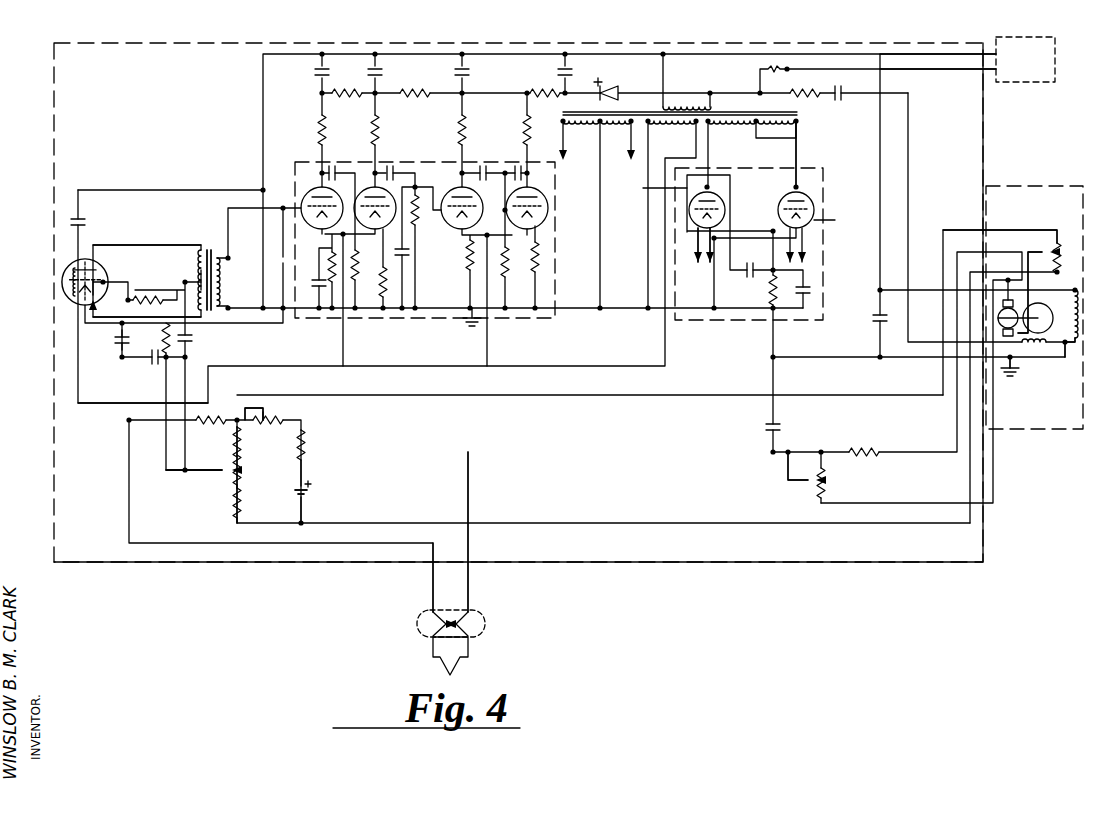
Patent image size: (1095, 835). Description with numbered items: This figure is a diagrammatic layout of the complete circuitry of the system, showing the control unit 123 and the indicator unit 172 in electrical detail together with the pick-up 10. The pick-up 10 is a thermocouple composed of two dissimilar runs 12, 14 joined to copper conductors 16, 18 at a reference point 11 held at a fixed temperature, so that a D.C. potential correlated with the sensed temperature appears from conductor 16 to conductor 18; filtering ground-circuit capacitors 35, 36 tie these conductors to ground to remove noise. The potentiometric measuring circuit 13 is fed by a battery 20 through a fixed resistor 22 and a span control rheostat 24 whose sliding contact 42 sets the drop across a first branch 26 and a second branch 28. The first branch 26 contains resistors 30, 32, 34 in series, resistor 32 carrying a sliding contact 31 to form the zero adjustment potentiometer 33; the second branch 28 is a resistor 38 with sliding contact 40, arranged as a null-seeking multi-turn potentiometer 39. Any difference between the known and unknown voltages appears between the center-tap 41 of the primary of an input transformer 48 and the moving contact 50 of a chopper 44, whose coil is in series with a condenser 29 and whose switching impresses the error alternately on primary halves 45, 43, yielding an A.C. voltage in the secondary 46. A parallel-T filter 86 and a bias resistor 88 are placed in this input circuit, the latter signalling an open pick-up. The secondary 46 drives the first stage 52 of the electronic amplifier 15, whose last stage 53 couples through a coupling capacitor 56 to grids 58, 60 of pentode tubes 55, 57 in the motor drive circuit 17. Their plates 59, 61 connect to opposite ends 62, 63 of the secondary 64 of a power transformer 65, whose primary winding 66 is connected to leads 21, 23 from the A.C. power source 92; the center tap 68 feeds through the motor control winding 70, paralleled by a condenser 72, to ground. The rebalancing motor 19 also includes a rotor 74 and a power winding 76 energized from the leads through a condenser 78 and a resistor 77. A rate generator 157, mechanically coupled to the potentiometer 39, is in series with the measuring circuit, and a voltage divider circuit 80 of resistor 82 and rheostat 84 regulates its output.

The thermocouple pick-up 10 is at (456, 666).
The reference point 11 is at (420, 620).
The run of material 12 is at (433, 641).
The potentiometric measuring circuit 13 is at (332, 454).
The run of material 14 is at (470, 644).
The electronic amplifier 15 is at (532, 318).
The copper conductor 16 is at (468, 584).
The motor drive circuit 17 is at (686, 321).
The copper conductor 18 is at (433, 581).
The two-phase reversible induction rebalancing motor 19 is at (1048, 375).
The battery 20 is at (310, 494).
The lead 21 is at (893, 54).
The fixed resistor 22 is at (304, 449).
The lead 23 is at (897, 69).
The span control rheostat 24 is at (262, 424).
The first parallel resistor branch 26 is at (235, 494).
The second parallel resistor branch 28 is at (240, 404).
The condenser 29 is at (70, 220).
The resistor 30 is at (234, 440).
The sliding contact 31 is at (215, 471).
The resistor 32 is at (244, 470).
The zero adjustment potentiometer 33 is at (180, 514).
The resistor 34 is at (244, 503).
The filtering ground-circuit capacitor 35 is at (781, 426).
The filtering ground-circuit capacitor 36 is at (119, 345).
The resistor 38 is at (1061, 241).
The null-seeking multi-turn potentiometer 39 is at (1043, 214).
The sliding contact 40 is at (1041, 249).
The center-tap 41 is at (198, 276).
The sliding contact 42 is at (270, 417).
The primary half 43 is at (201, 317).
The chopper 44 is at (63, 291).
The primary half 45 is at (197, 257).
The secondary 46 is at (224, 288).
The input transformer 48 is at (210, 238).
The moving contact 50 is at (93, 262).
The first stage 52 is at (306, 182).
The last stage 53 is at (548, 206).
The pentode electronic tube 55 is at (723, 200).
The coupling capacitor 56 is at (748, 278).
The pentode electronic tube 57 is at (814, 205).
The grid 58 is at (702, 244).
The plate 59 is at (653, 190).
The grid 60 is at (836, 222).
The plate 61 is at (801, 193).
The end of secondary 62 is at (714, 128).
The end of secondary 63 is at (795, 130).
The secondary 64 is at (745, 100).
The power transformer 65 is at (818, 120).
The primary winding 66 is at (686, 103).
The center tap 68 is at (756, 130).
The motor control winding 70 is at (1069, 358).
The condenser 72 is at (878, 322).
The rotor 74 is at (1046, 310).
The power winding 76 is at (1035, 349).
The resistor 77 is at (807, 90).
The condenser 78 is at (838, 90).
The voltage divider circuit 80 is at (800, 489).
The resistor 82 is at (871, 452).
The rheostat 84 is at (826, 484).
The parallel-T filter 86 is at (131, 388).
The bias resistor 88 is at (200, 426).
The A.C. power source 92 is at (1048, 86).
The control unit 123 is at (752, 562).
The rate generator 157 is at (998, 320).
The indicator unit 172 is at (1080, 430).